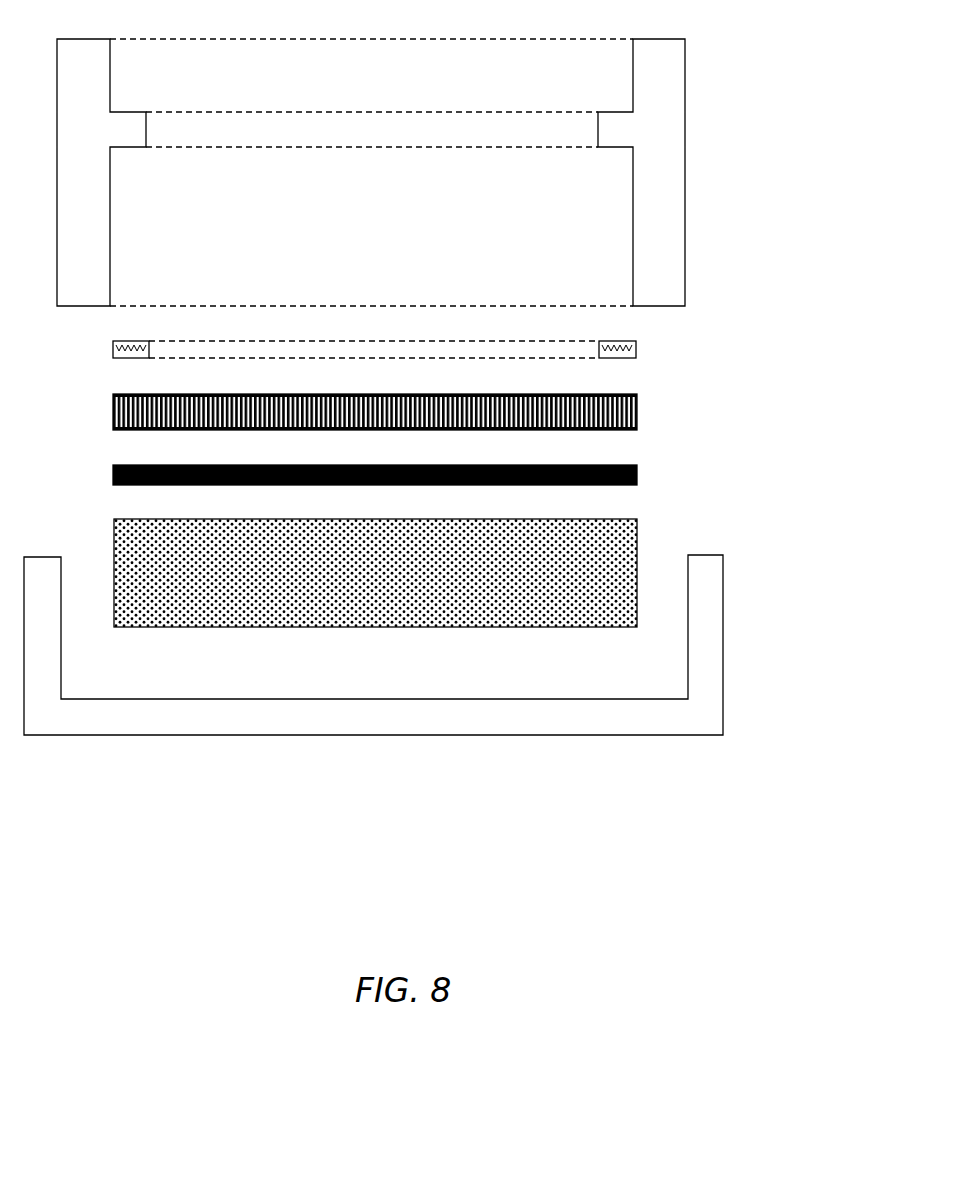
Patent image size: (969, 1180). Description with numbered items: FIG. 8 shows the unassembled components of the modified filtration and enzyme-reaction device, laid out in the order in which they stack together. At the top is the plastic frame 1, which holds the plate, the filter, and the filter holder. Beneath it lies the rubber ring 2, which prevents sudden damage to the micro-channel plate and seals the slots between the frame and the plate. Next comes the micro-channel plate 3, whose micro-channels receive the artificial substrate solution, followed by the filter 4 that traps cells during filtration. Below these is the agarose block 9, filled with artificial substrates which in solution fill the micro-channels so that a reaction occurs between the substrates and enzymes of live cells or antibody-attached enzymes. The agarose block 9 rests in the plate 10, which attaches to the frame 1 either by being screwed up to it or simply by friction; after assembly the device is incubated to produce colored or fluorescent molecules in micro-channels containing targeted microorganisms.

The frame 1 is at (668, 149).
The rubber ring 2 is at (637, 339).
The micro-channel plate 3 is at (602, 411).
The filter 4 is at (637, 464).
The agarose block 9 is at (570, 573).
The plate for agar block 10 is at (710, 697).